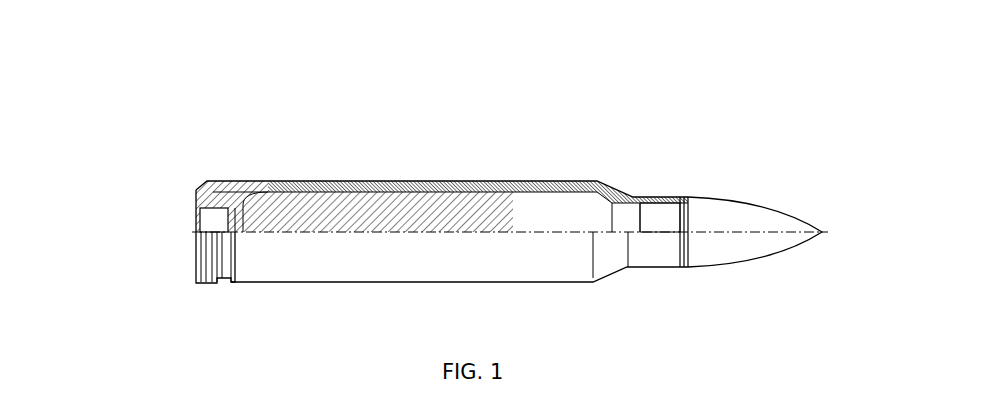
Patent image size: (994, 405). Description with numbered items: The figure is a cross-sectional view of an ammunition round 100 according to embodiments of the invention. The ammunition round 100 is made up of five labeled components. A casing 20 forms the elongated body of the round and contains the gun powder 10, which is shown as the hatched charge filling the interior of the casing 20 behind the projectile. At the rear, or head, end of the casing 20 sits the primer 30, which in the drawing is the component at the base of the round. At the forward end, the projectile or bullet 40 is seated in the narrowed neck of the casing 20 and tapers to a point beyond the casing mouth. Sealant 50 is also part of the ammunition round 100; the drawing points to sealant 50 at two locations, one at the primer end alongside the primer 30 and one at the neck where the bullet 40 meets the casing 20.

The ammunition round 100 is at (497, 158).
The gun powder 10 is at (269, 186).
The casing 20 is at (374, 185).
The primer 30 is at (196, 190).
The projectile 40 is at (796, 227).
The sealant 50 is at (820, 85).